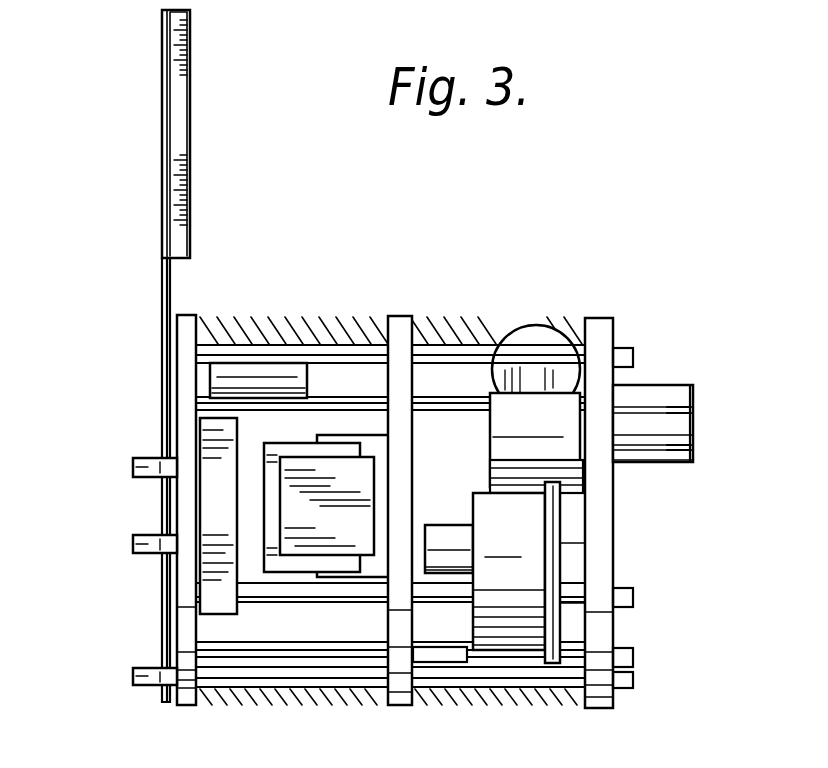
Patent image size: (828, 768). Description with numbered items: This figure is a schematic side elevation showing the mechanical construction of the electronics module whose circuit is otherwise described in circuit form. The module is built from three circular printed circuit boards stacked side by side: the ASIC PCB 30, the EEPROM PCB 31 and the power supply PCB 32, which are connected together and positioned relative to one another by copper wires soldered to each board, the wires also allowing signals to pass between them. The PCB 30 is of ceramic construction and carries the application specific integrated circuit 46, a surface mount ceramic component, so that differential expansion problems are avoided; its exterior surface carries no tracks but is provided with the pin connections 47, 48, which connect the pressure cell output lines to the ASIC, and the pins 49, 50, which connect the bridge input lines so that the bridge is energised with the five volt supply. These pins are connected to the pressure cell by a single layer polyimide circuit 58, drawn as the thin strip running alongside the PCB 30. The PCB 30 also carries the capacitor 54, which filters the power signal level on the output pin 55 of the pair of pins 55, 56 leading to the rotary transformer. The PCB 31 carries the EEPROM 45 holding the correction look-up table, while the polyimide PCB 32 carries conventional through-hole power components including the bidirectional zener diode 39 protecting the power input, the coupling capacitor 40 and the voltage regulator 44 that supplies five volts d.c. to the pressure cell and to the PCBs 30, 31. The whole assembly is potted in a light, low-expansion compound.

The ASIC PCB 30 is at (190, 315).
The EEPROM PCB 31 is at (400, 318).
The power supply PCB 32 is at (597, 318).
The bidirectional zener diode 39 is at (522, 330).
The capacitor 40 is at (498, 430).
The voltage regulator 44 is at (476, 497).
The EEPROM 45 is at (270, 555).
The application specific integrated circuit 46 is at (200, 430).
The pin connection 47 is at (133, 468).
The pin connection 48 is at (133, 544).
The pin 49 is at (98, 689).
The pin 50 is at (133, 676).
The capacitor 54 is at (268, 372).
The pin 55 is at (665, 468).
The pin 56 is at (679, 427).
The single layer polyimide circuit 58 is at (190, 120).